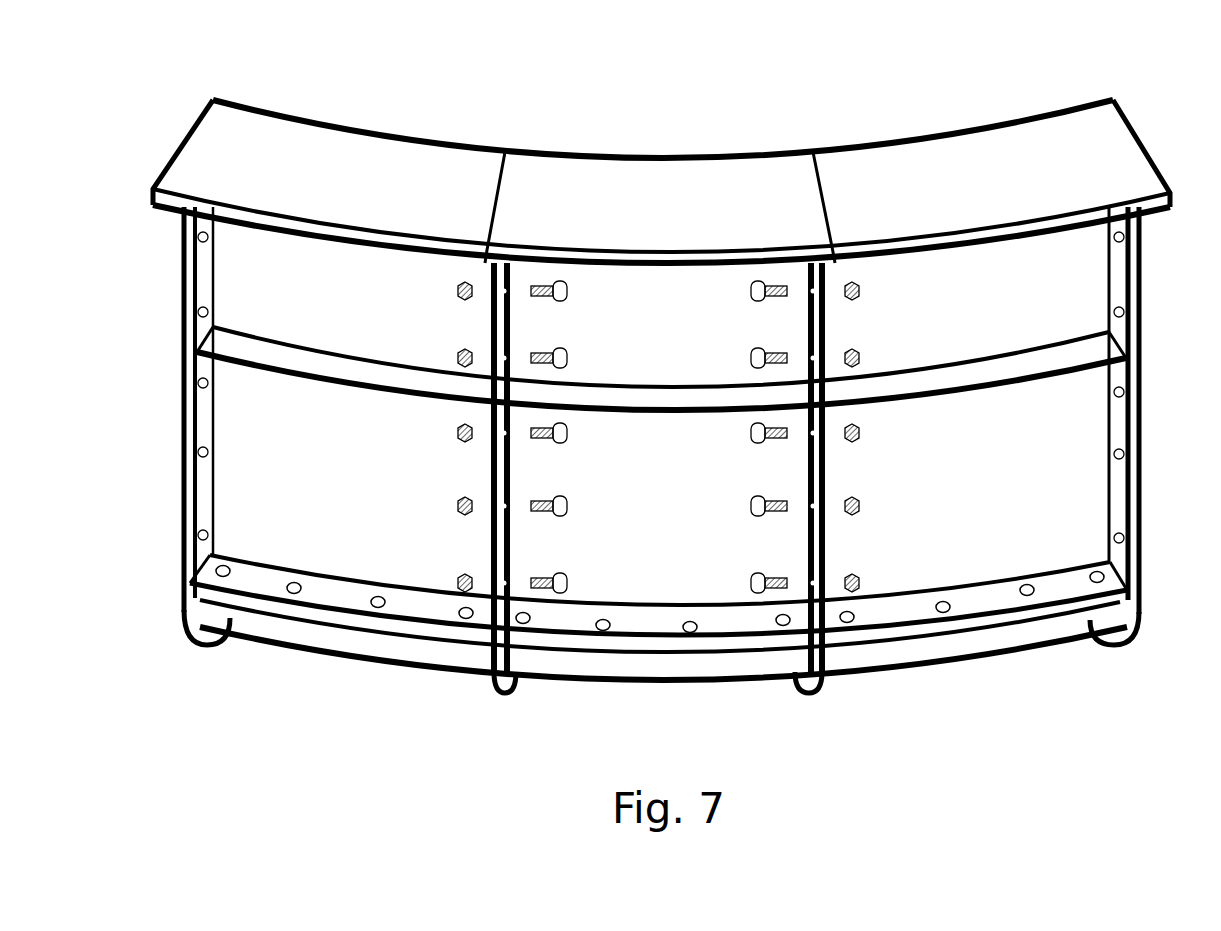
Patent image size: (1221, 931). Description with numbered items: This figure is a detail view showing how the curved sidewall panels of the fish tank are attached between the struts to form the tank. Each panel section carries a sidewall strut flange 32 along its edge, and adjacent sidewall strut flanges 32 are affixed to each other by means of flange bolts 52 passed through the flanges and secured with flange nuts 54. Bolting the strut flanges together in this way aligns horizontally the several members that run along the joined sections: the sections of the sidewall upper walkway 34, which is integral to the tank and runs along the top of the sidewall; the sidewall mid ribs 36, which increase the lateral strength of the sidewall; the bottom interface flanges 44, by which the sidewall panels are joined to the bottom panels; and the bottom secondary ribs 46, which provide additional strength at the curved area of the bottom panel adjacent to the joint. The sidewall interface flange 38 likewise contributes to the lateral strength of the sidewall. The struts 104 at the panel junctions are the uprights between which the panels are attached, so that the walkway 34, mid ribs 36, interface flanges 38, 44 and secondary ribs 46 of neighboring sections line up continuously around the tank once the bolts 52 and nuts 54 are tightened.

The sidewall upper walkway 34 is at (973, 200).
The sidewall strut flange 32 is at (180, 276).
The sidewall mid rib 36 is at (1018, 386).
The sidewall interface flange 38 is at (248, 565).
The bottom interface flange 44 is at (322, 636).
The bottom secondary rib 46 is at (915, 660).
The flange bolt 52 is at (732, 506).
The flange nut 54 is at (885, 508).
The center post 104 is at (487, 548).